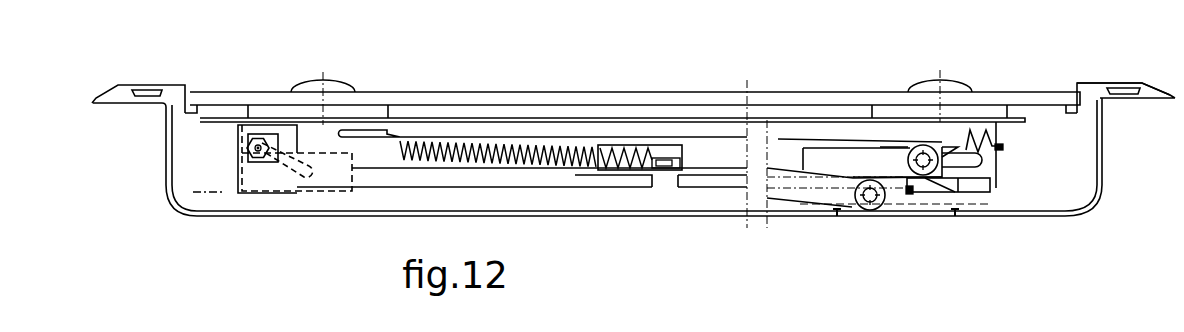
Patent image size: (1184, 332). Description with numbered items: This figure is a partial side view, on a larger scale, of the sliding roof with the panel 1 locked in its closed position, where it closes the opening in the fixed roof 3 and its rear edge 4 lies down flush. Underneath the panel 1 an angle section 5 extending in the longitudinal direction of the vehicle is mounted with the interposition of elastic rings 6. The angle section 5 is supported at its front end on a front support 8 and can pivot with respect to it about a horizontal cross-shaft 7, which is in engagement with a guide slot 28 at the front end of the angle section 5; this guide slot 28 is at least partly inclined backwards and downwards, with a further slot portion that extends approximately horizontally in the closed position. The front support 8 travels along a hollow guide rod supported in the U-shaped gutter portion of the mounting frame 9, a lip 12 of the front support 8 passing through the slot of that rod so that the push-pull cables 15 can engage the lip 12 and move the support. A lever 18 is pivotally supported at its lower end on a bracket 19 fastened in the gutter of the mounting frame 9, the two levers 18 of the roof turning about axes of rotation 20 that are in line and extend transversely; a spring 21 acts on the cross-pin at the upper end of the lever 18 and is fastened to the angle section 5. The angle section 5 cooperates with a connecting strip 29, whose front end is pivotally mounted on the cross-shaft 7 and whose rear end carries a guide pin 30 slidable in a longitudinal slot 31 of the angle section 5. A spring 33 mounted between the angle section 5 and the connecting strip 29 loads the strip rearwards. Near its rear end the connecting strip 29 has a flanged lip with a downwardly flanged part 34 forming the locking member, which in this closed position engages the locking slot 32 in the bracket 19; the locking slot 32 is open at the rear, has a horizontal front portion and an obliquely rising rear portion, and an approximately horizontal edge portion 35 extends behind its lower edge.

The panel 1 is at (475, 84).
The fixed roof 3 is at (108, 104).
The rear edge 4 is at (1078, 90).
The angle section 5 is at (601, 178).
The elastic rings 6 is at (890, 110).
The cross-shaft 7 is at (243, 130).
The front support 8 is at (322, 183).
The mounting frame 9 is at (181, 211).
The lip 12 is at (254, 193).
The push-pull cables 15 is at (209, 195).
The lever 18 is at (790, 190).
The bracket 19 is at (980, 194).
The axes of rotation 20 is at (870, 197).
The spring 21 is at (968, 143).
The guide slot 28 is at (285, 146).
The connecting strip 29 is at (778, 150).
The guide pin 30 is at (923, 158).
The longitudinal slot 31 is at (995, 175).
The locking slot 32 is at (920, 188).
The spring 33 is at (538, 142).
The downwardly flanged part 34 is at (908, 192).
The horizontal edge portion 35 is at (965, 175).